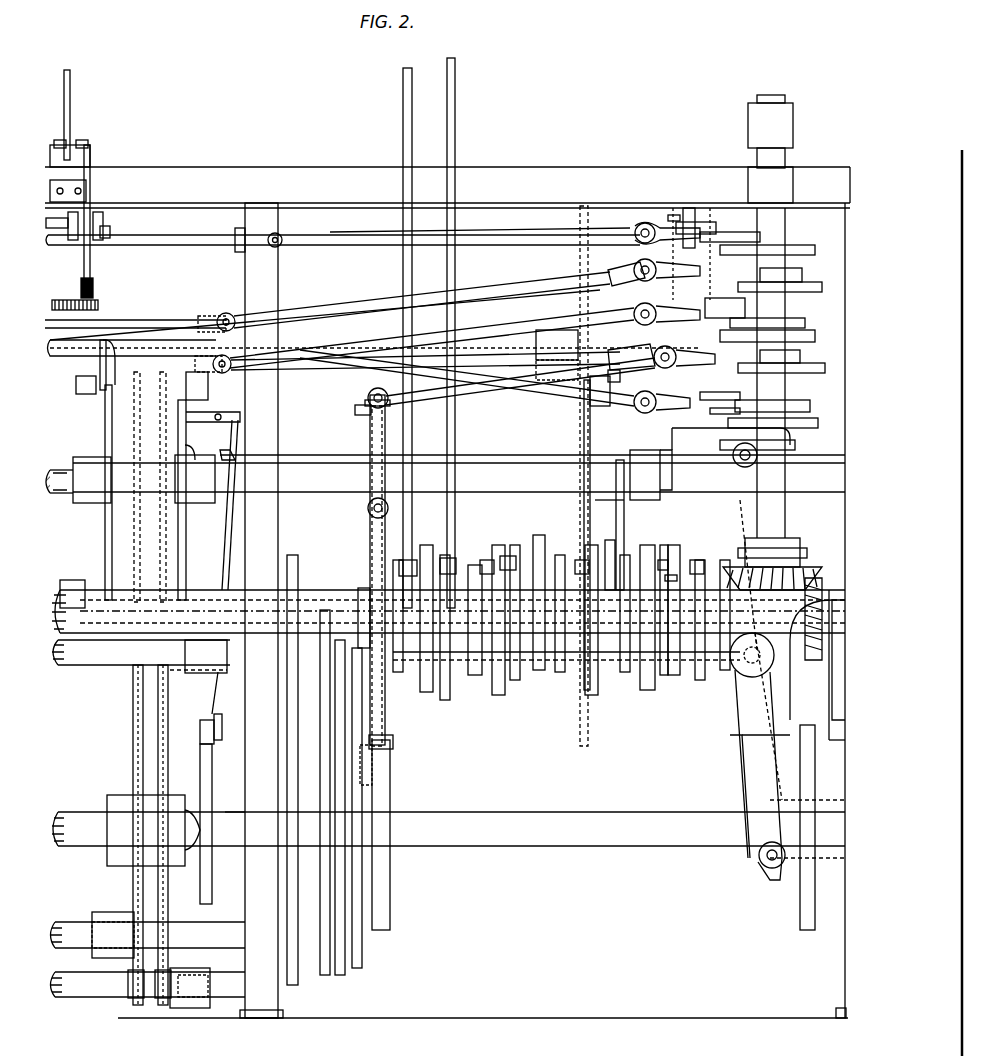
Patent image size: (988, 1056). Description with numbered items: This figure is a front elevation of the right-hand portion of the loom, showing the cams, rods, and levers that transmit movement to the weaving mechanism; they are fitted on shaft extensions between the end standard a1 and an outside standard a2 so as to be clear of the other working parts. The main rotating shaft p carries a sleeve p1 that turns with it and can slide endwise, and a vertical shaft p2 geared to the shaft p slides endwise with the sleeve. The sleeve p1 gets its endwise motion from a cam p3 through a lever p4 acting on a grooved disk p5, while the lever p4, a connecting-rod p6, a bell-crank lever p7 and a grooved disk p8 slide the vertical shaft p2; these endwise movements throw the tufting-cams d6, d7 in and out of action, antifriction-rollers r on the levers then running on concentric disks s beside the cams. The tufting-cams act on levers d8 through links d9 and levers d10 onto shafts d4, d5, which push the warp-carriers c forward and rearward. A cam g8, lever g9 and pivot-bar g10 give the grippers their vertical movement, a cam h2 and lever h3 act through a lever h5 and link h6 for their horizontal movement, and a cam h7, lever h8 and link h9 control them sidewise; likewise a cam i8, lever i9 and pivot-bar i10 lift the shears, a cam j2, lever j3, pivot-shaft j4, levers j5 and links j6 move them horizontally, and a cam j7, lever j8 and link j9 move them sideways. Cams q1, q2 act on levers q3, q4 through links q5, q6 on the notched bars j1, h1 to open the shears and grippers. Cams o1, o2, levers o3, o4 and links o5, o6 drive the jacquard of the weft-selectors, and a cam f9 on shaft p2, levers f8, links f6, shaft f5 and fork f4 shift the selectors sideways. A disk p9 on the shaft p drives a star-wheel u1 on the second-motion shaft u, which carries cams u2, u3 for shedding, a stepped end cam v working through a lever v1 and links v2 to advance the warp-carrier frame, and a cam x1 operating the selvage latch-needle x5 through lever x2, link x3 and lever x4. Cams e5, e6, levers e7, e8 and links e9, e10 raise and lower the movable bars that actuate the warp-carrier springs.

The end standard a1 is at (447, 592).
The outside standard a2 is at (840, 950).
The warp-carrier c is at (70, 306).
The lever f is at (97, 264).
The fork f4 is at (103, 236).
The shaft f5 is at (198, 236).
The link f6 is at (503, 233).
The lever f8 is at (703, 225).
The cam f9 is at (805, 248).
The vertical shaft p2 is at (768, 495).
The cam q2 is at (810, 285).
The lever j8 is at (735, 318).
The cam j7 is at (810, 340).
The cam q1 is at (815, 372).
The lever h8 is at (728, 412).
The cam h7 is at (805, 420).
The grooved disk p8 is at (785, 448).
The antifriction-roller r is at (449, 601).
The concentric disk s is at (624, 461).
The notched bar j1 is at (148, 320).
The link q6 is at (478, 292).
The lever q4 is at (640, 268).
The shaft d4 is at (470, 340).
The link j9 is at (528, 318).
The shaft d5 is at (582, 328).
The link q5 is at (495, 364).
The lever q3 is at (655, 350).
The connecting-rod p6 is at (495, 395).
The lever d10 is at (600, 385).
The link d9 is at (694, 545).
The link h9 is at (612, 416).
The bell-crank lever p7 is at (665, 430).
The link v2 is at (512, 463).
The pivot-shaft j4 is at (62, 480).
The link j6 is at (94, 394).
The lever j5 is at (100, 408).
The notched bar h1 is at (126, 380).
The latch-needle x5 is at (180, 376).
The link h6 is at (182, 400).
The lever x4 is at (210, 420).
The lever h5 is at (185, 452).
The link x3 is at (228, 540).
The lever x2 is at (220, 735).
The cam x1 is at (212, 786).
The main rotating shaft p is at (448, 606).
The disk p9 is at (289, 578).
The grooved disk p5 is at (368, 585).
The lever p4 is at (370, 545).
The cam p3 is at (386, 840).
The star-wheel u1 is at (298, 962).
The cam u2 is at (338, 975).
The cam u3 is at (365, 965).
The link o5 is at (414, 445).
The link o6 is at (450, 440).
The lever o3 is at (420, 566).
The lever o4 is at (458, 566).
The cam o1 is at (400, 672).
The cam o2 is at (436, 695).
The sleeve p1 is at (628, 686).
The lever d8 is at (580, 560).
The lever g9 is at (578, 565).
The lever i9 is at (488, 560).
The lever h3 is at (622, 540).
The lever j3 is at (668, 565).
The pivot-bar i10 is at (60, 592).
The pivot-bar g10 is at (141, 656).
The link e10 is at (134, 684).
The link e9 is at (166, 684).
The second-motion shaft u is at (448, 827).
The lever e8 is at (128, 965).
The lever e7 is at (147, 988).
The cam e5 is at (136, 998).
The cam e6 is at (164, 990).
The cam g8 is at (530, 672).
The cam i8 is at (475, 690).
The tufting-cam d6 is at (562, 672).
The cam h2 is at (602, 680).
The cam j2 is at (660, 680).
The tufting-cam d7 is at (700, 672).
The lever v1 is at (760, 679).
The stepped end cam v is at (776, 880).